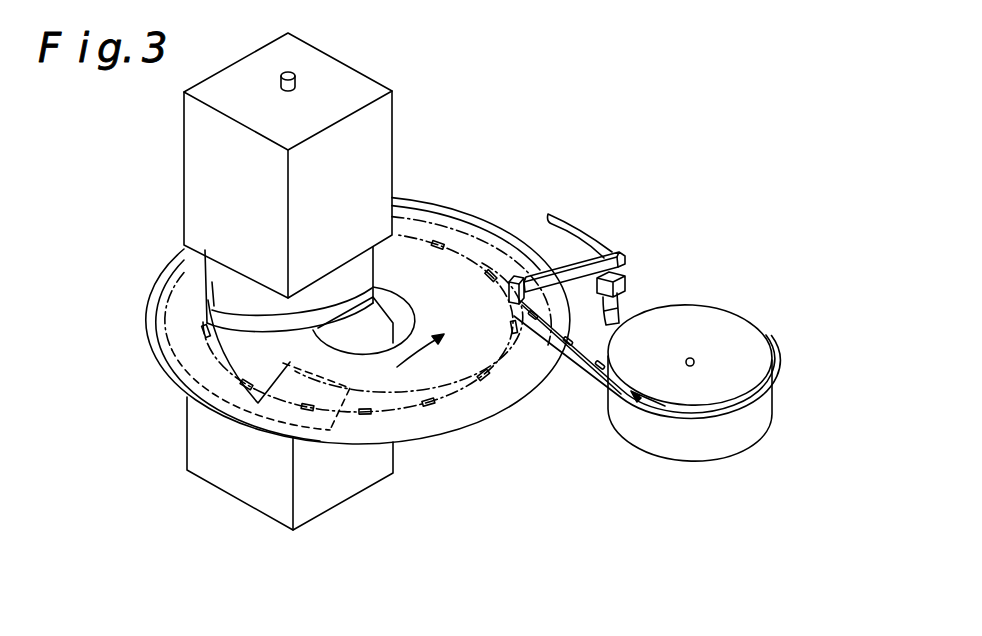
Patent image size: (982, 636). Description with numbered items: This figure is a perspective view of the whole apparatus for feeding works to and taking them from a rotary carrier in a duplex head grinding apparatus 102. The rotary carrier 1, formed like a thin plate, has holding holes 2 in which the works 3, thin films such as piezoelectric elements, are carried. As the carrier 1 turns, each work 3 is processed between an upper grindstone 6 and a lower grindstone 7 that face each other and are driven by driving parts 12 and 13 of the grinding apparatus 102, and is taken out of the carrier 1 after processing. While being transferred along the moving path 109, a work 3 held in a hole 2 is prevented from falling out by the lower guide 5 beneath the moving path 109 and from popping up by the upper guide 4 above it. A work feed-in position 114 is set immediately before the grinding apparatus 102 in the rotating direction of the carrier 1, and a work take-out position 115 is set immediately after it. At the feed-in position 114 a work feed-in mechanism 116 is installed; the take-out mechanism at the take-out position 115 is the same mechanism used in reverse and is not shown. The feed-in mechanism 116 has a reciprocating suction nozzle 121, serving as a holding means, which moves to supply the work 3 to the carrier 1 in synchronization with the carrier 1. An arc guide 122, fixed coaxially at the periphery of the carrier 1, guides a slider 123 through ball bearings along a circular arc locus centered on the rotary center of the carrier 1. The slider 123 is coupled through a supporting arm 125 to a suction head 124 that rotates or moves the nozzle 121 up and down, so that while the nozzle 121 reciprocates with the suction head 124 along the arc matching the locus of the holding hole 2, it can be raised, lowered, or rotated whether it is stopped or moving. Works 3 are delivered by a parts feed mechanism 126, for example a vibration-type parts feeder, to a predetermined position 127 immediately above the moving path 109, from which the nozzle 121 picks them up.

The rotary carrier 1 is at (471, 420).
The holding hole 2 is at (437, 406).
The work 3 is at (492, 270).
The upper guide 4 is at (166, 300).
The lower guide 5 is at (283, 363).
The upper grindstone 6 is at (420, 240).
The lower grindstone 7 is at (462, 266).
The driving part 12 is at (372, 133).
The driving part 13 is at (205, 462).
The duplex head grinding apparatus 102 is at (184, 178).
The moving path 109 is at (402, 410).
The work feed-in position 114 is at (487, 294).
The work take-out position 115 is at (271, 413).
The work feed-in mechanism 116 is at (594, 233).
The suction nozzle 121 is at (514, 333).
The arc guide 122 is at (626, 294).
The slider 123 is at (612, 273).
The suction head 124 is at (516, 275).
The supporting arm 125 is at (549, 213).
The parts feed mechanism 126 is at (733, 343).
The predetermined position 127 is at (618, 313).